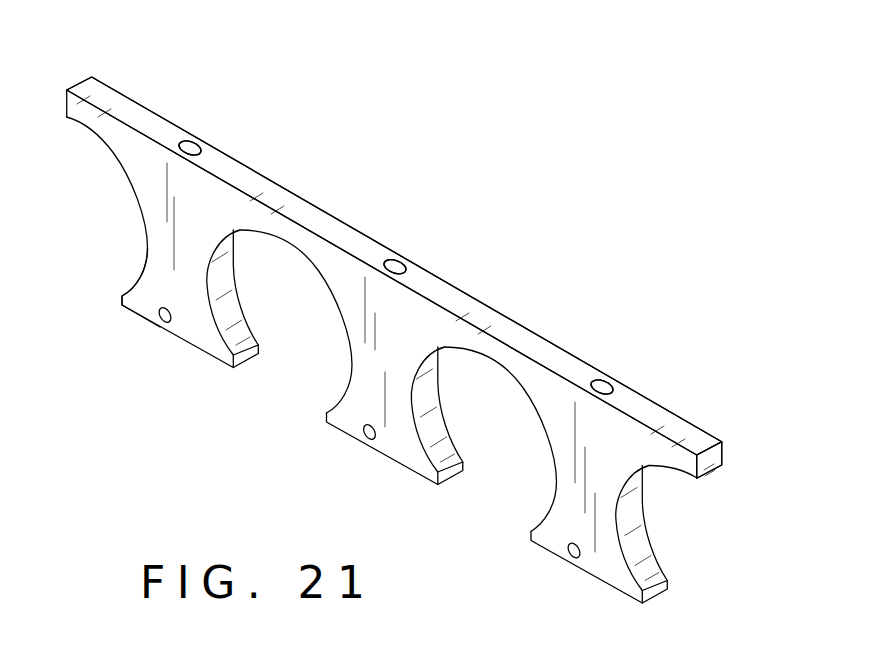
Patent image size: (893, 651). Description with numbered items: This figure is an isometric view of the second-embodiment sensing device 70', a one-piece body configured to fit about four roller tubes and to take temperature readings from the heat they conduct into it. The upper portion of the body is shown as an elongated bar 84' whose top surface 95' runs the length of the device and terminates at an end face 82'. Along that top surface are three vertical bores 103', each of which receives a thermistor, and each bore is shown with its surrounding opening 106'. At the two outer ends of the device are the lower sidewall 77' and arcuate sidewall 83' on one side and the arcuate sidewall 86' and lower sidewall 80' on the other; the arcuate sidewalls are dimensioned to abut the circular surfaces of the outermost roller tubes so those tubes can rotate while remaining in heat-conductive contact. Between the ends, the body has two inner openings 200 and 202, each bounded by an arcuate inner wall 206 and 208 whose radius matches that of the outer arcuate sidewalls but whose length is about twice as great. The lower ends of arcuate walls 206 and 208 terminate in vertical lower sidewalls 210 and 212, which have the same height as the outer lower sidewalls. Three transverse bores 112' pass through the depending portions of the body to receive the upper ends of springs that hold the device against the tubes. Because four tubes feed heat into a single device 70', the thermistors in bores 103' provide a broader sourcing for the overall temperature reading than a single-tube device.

The sensing device 70' is at (413, 325).
The top rail 84' is at (386, 243).
The top surface of rail 95' is at (421, 266).
The end face of rail 82' is at (741, 470).
The mounting aperture 106' is at (391, 229).
The vertical bore 103' is at (439, 236).
The arcuate sidewall 83' is at (150, 242).
The lower sidewall 77' is at (101, 287).
The arcuate inner wall 206 is at (228, 278).
The arcuate inner wall 208 is at (552, 460).
The arcuate sidewall 86' is at (678, 528).
The vertical lower sidewall 210 is at (248, 357).
The vertical lower sidewall 212 is at (450, 478).
The lower sidewall 80' is at (696, 612).
The inner opening 200 is at (297, 257).
The inner opening 202 is at (478, 357).
The transverse bore 112' is at (334, 451).